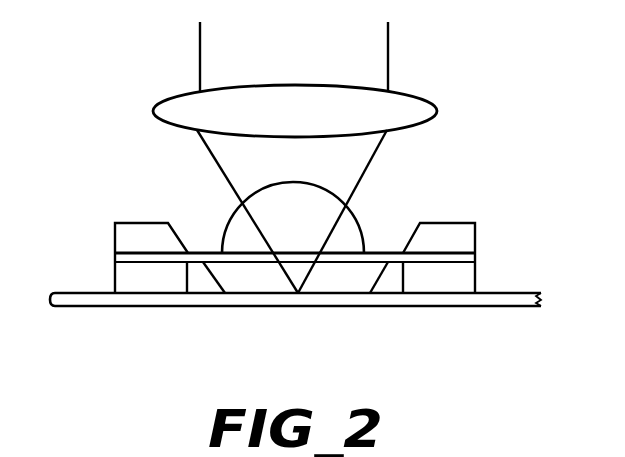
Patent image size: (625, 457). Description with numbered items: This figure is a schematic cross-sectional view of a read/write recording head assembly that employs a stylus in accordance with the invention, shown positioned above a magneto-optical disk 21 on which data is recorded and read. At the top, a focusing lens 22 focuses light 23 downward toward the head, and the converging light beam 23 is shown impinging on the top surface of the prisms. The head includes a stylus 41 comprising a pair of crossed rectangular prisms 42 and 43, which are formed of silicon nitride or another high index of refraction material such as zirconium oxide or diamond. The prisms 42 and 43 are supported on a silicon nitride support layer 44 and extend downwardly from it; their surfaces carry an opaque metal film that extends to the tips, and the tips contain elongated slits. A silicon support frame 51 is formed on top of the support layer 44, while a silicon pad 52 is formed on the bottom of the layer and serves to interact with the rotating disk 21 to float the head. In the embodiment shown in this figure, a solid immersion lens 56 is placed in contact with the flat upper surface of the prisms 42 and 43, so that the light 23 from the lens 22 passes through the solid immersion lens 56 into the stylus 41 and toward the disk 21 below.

The magneto-optical disk 21 is at (512, 302).
The focusing lens 22 is at (312, 102).
The light beam 23 is at (213, 160).
The stylus 41 is at (254, 311).
The rectangular prism 42 is at (300, 275).
The rectangular prism 43 is at (362, 277).
The silicon nitride support layer 44 is at (467, 258).
The silicon support frame 51 is at (133, 240).
The silicon pad 52 is at (135, 278).
The solid immersion lens 56 is at (360, 222).